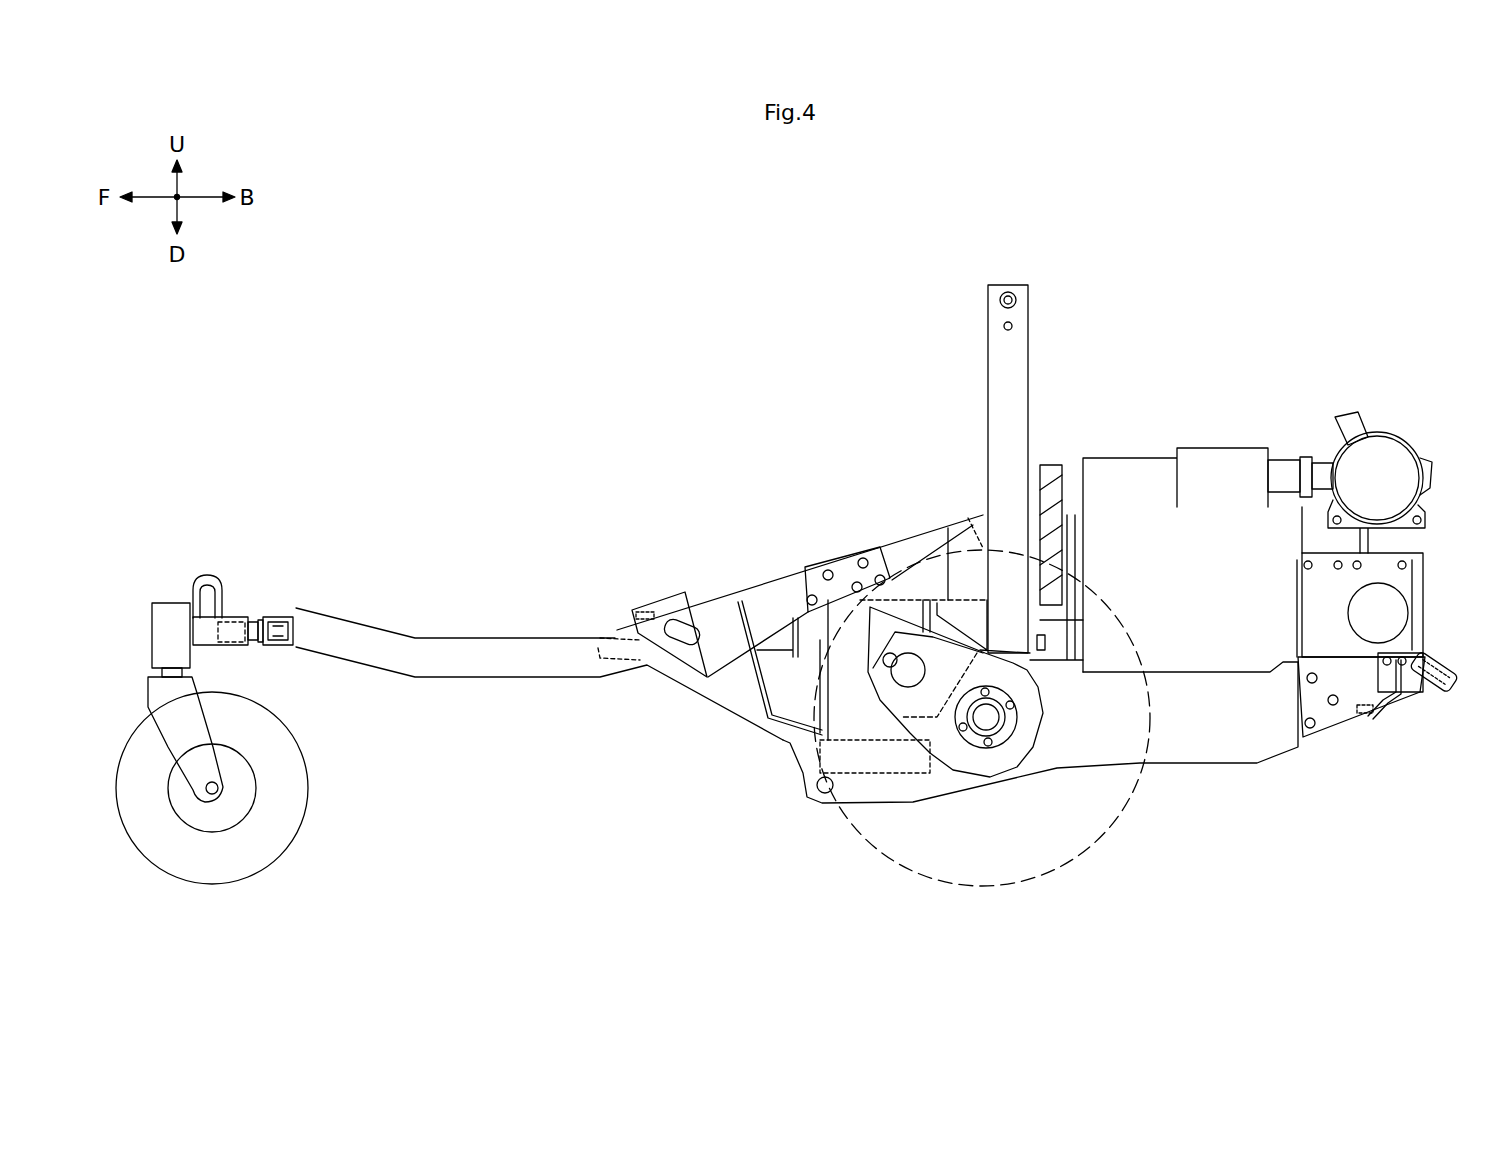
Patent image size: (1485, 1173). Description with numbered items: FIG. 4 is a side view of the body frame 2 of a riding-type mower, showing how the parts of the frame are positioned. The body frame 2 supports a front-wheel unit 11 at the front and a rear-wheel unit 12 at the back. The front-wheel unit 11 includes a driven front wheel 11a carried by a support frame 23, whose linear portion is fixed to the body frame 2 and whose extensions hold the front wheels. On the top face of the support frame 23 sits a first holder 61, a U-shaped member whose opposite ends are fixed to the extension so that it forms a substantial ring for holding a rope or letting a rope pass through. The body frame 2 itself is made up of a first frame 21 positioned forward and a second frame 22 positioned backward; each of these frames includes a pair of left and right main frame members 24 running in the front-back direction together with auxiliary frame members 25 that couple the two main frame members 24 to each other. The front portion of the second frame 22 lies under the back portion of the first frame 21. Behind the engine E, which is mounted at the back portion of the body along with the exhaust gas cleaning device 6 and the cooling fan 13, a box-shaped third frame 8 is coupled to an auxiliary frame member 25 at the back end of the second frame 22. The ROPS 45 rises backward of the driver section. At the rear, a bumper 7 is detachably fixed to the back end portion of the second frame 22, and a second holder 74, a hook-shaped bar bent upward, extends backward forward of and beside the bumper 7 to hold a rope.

The body frame 2 is at (492, 378).
The front-wheel unit 11 is at (230, 779).
The front wheel 11a is at (245, 862).
The support frame 23 is at (210, 643).
The first holder 61 is at (200, 590).
The main frame member 24 is at (772, 685).
The first frame 21 is at (490, 662).
The second frame 22 is at (1183, 745).
The auxiliary frame member 25 is at (676, 592).
The rear-wheel unit 12 is at (1082, 862).
The ROPS 45 is at (1002, 428).
The cooling fan 13 is at (1055, 475).
The engine E is at (1160, 475).
The exhaust gas cleaning device 6 is at (1383, 450).
The third frame 8 is at (1423, 592).
The second holder 74 is at (1392, 692).
The bumper 7 is at (1453, 688).